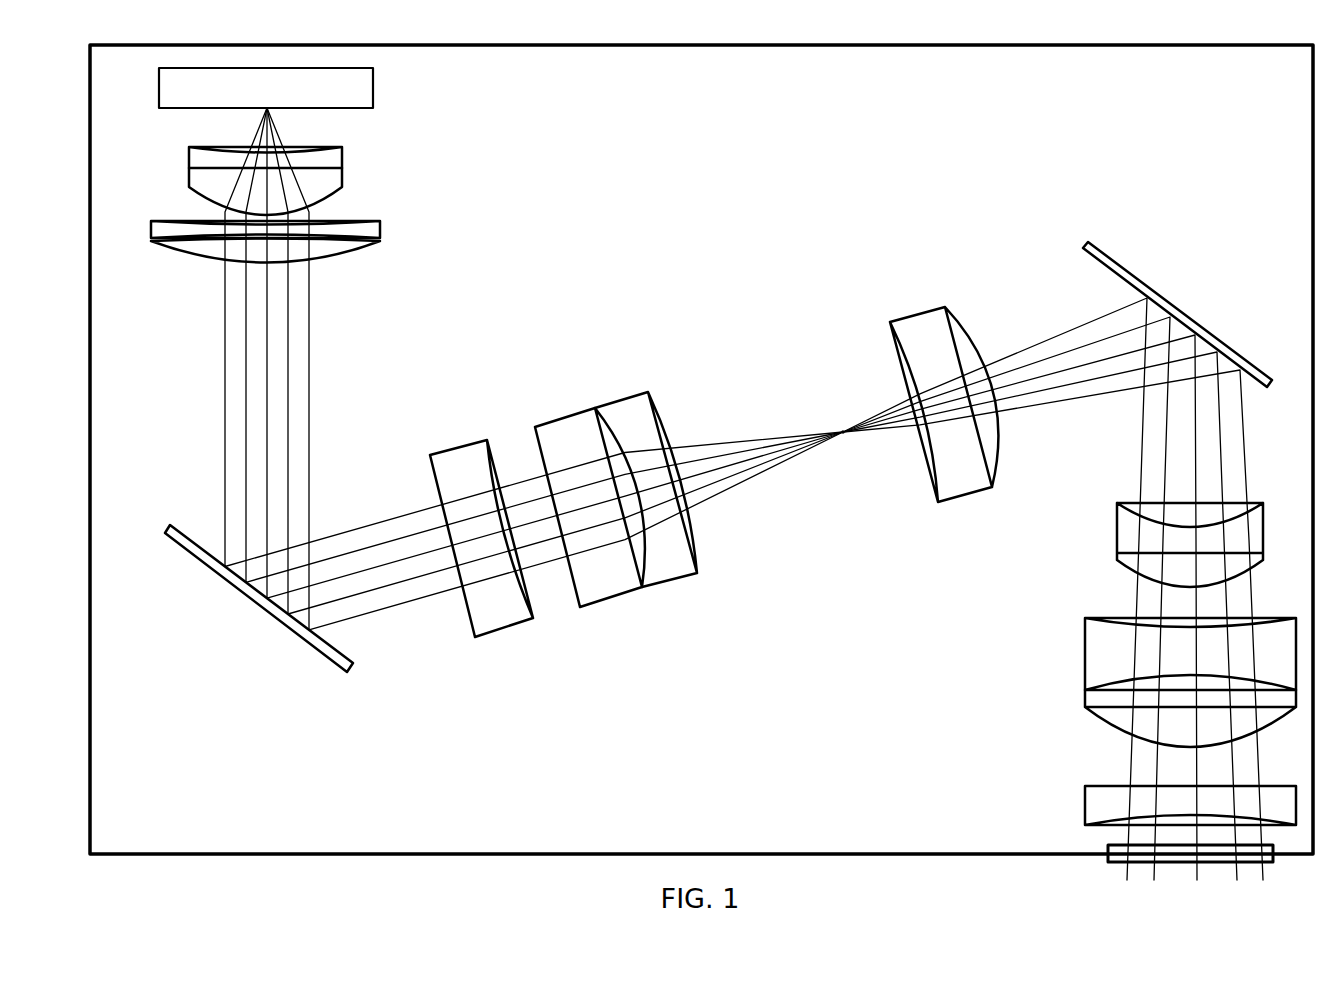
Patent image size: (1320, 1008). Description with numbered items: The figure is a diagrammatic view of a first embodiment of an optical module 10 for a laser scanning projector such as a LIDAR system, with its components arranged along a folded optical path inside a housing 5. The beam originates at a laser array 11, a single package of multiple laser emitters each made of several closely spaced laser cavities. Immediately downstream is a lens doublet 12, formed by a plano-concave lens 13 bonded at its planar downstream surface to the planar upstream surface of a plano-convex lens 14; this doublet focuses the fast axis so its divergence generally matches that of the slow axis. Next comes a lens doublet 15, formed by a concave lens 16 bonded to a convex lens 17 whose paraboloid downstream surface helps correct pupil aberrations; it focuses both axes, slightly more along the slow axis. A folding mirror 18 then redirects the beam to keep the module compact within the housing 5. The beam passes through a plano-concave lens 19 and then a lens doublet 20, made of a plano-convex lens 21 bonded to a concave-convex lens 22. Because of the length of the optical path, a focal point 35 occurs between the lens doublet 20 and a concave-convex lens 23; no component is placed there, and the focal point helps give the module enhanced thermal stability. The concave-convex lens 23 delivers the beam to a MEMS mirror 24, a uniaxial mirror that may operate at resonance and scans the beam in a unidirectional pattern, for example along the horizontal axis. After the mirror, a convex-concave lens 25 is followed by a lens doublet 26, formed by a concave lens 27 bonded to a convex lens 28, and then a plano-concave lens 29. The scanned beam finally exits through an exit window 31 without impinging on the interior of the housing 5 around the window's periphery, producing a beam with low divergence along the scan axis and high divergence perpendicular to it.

The housing 5 is at (480, 43).
The optical module 10 is at (637, 208).
The laser array 11 is at (159, 85).
The lens doublet 12 is at (275, 181).
The plano-concave lens 13 is at (189, 158).
The plano-convex lens 14 is at (189, 185).
The lens doublet 15 is at (276, 247).
The concave lens 16 is at (151, 228).
The convex lens 17 is at (153, 252).
The folding mirror 18 is at (172, 545).
The plano-concave lens 19 is at (498, 637).
The lens doublet 20 is at (616, 535).
The plano-convex lens 21 is at (607, 608).
The concave-convex lens 22 is at (667, 589).
The concave-convex lens 23 is at (960, 505).
The MEMS mirror 24 is at (1116, 253).
The convex-concave lens 25 is at (1117, 528).
The lens doublet 26 is at (1150, 682).
The concave lens 27 is at (1085, 646).
The convex lens 28 is at (1085, 716).
The plano-concave lens 29 is at (1085, 802).
The exit window 31 is at (1114, 863).
The focal point 35 is at (840, 416).